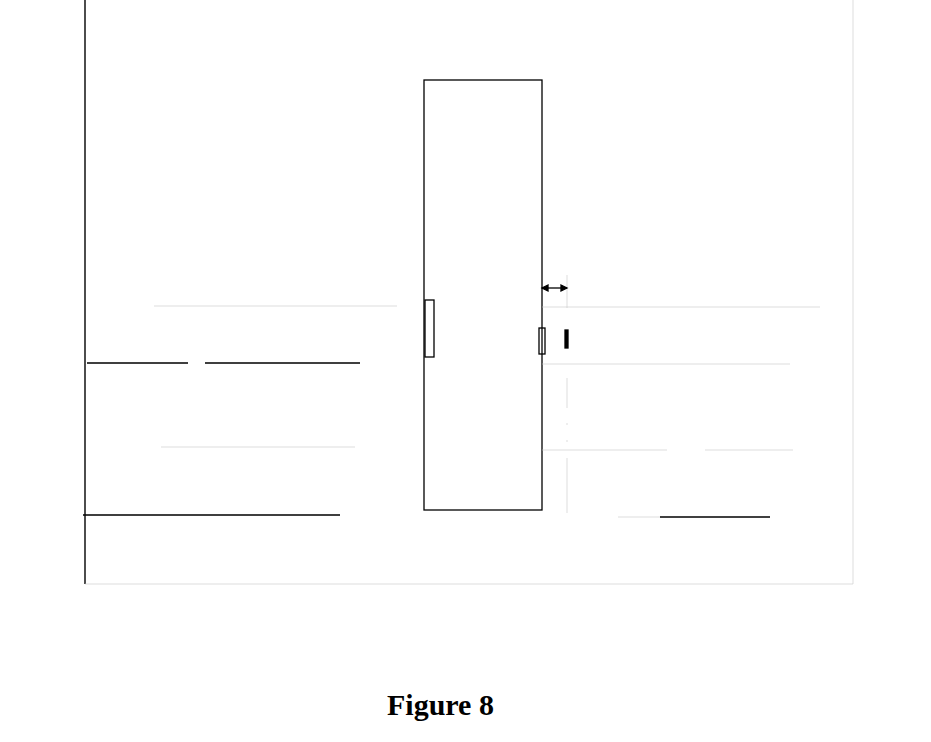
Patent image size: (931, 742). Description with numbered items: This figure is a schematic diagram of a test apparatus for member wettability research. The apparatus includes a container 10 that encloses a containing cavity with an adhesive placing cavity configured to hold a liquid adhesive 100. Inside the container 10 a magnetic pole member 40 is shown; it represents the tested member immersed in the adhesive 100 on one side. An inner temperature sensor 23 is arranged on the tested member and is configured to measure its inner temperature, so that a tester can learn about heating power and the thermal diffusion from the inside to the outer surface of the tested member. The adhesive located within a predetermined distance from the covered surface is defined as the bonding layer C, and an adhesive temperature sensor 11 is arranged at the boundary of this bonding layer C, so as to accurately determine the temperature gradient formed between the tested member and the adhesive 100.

The container 10 is at (85, 87).
The adhesive 100 is at (304, 326).
The magnetic pole member 40 is at (455, 212).
The inner temperature sensor 23 is at (423, 300).
The adhesive temperature sensor 11 is at (568, 340).
The bonding layer C is at (552, 284).